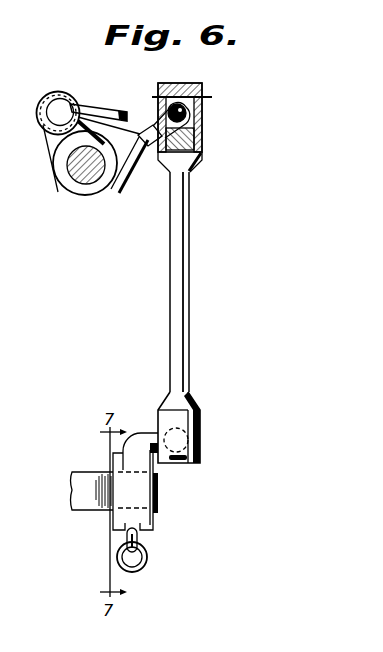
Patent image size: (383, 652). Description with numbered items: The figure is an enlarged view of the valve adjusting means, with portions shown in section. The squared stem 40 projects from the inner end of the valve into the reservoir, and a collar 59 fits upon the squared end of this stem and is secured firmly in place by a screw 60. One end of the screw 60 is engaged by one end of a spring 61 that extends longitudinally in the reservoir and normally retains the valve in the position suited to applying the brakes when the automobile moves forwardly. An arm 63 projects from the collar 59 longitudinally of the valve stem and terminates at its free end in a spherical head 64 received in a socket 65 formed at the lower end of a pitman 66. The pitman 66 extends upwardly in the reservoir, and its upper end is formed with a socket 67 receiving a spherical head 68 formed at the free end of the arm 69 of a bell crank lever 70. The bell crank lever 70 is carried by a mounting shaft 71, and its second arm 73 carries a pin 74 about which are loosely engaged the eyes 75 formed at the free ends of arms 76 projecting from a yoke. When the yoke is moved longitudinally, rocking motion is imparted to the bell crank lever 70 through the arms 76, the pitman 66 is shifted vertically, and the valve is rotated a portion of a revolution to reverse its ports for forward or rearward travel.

The stem 40 is at (155, 499).
The collar 59 is at (133, 500).
The screw 60 is at (141, 539).
The spring 61 is at (148, 564).
The arm 63 is at (147, 433).
The spherical head 64 is at (200, 434).
The socket 65 is at (194, 407).
The pitman 66 is at (190, 296).
The socket 67 is at (205, 141).
The spherical head 68 is at (188, 117).
The arm 69 is at (130, 167).
The bell crank lever 70 is at (64, 188).
The mounting shaft 71 is at (90, 184).
The second arm 73 is at (55, 148).
The pin 74 is at (41, 100).
The eyes 75 is at (62, 98).
The arms 76 is at (109, 106).